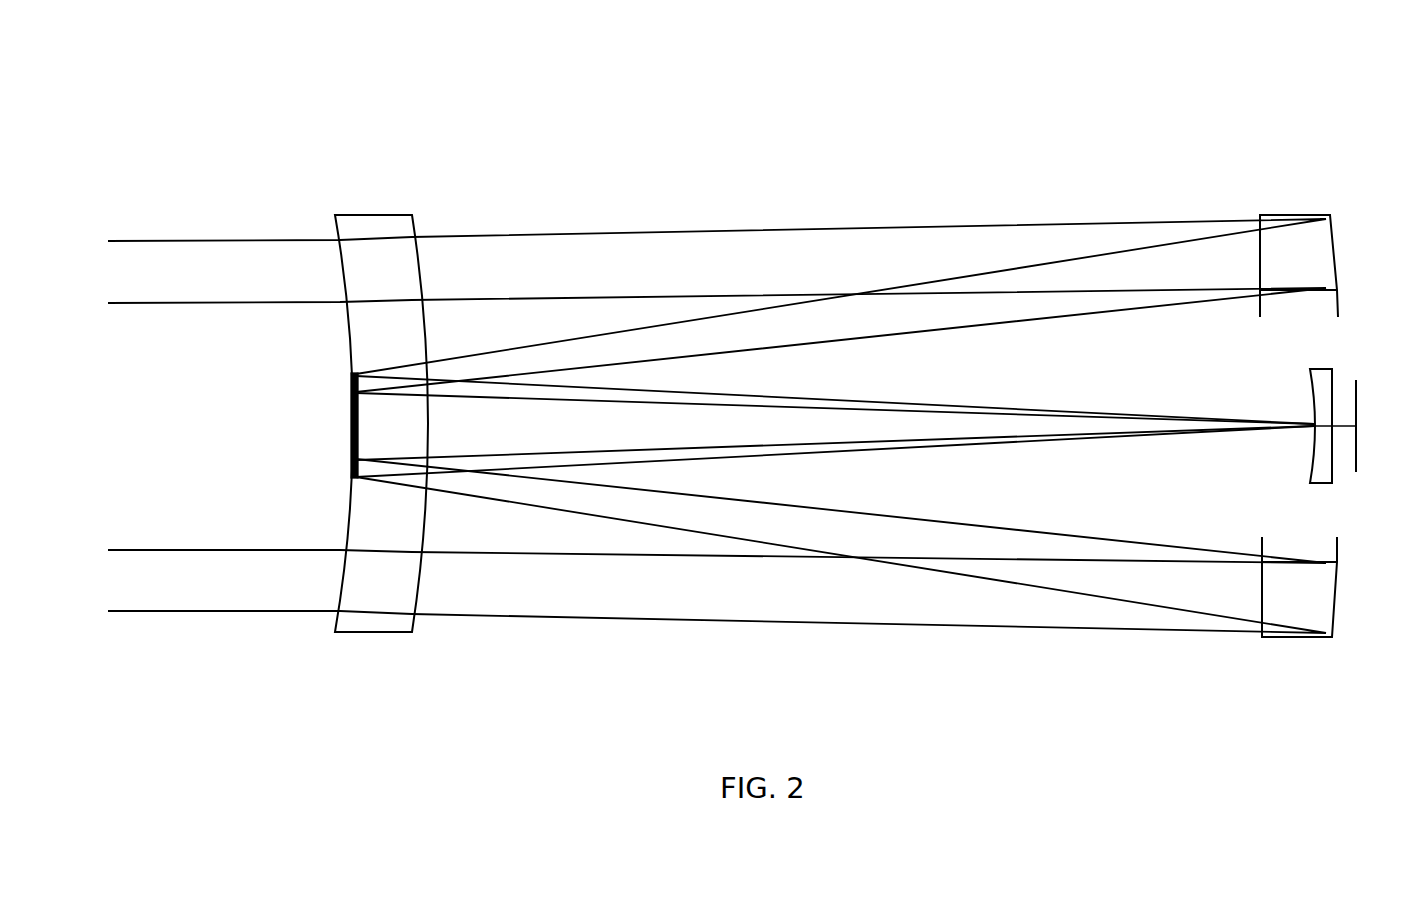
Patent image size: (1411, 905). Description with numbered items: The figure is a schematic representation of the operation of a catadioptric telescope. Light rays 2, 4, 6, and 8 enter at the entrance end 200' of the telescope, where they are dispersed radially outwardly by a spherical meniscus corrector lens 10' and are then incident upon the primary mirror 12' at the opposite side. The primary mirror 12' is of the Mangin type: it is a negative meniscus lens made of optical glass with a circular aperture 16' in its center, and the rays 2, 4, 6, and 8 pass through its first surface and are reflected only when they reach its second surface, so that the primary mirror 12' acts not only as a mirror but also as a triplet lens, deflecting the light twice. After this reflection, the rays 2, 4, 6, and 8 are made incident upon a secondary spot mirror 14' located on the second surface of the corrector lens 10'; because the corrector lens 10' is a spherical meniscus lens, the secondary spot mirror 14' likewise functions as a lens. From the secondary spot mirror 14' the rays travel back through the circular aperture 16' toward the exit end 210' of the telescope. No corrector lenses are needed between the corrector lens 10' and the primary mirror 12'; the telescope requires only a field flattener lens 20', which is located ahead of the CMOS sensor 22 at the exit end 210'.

The entrance end 200' is at (305, 350).
The exit end 210' is at (1256, 379).
The ray 2 is at (207, 235).
The ray 4 is at (207, 300).
The ray 6 is at (210, 553).
The ray 8 is at (210, 618).
The spherical meniscus corrector lens 10' is at (381, 423).
The primary mirror 12' is at (1228, 406).
The secondary spot mirror 14' is at (302, 425).
The circular aperture 16' is at (1228, 369).
The field flattener lens 20' is at (1254, 526).
The CMOS sensor 22 is at (1356, 380).